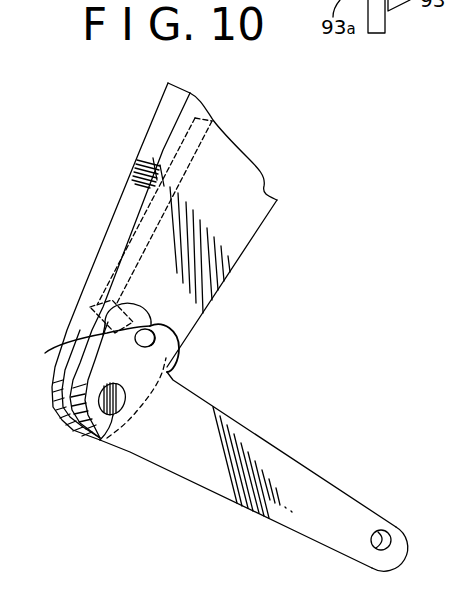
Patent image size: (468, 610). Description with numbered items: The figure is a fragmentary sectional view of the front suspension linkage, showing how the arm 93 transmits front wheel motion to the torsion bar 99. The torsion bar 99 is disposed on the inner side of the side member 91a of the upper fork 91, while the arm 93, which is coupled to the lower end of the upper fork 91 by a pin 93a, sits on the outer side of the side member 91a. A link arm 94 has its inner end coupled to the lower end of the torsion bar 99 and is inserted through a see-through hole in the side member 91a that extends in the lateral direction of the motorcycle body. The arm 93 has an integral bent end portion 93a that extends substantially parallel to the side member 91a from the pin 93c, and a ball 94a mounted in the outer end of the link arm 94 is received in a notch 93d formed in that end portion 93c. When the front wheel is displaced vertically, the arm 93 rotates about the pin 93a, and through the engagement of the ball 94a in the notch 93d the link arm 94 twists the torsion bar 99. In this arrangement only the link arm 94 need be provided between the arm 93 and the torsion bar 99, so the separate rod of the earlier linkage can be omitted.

The upper fork 91 is at (181, 261).
The side member 91a is at (245, 251).
The arm 93 is at (230, 446).
The pin 93a is at (100, 440).
The pin 93c is at (133, 303).
The notch 93d is at (170, 325).
The link arm 94 is at (135, 256).
The ball 94a is at (163, 358).
The torsion bar 99 is at (137, 164).